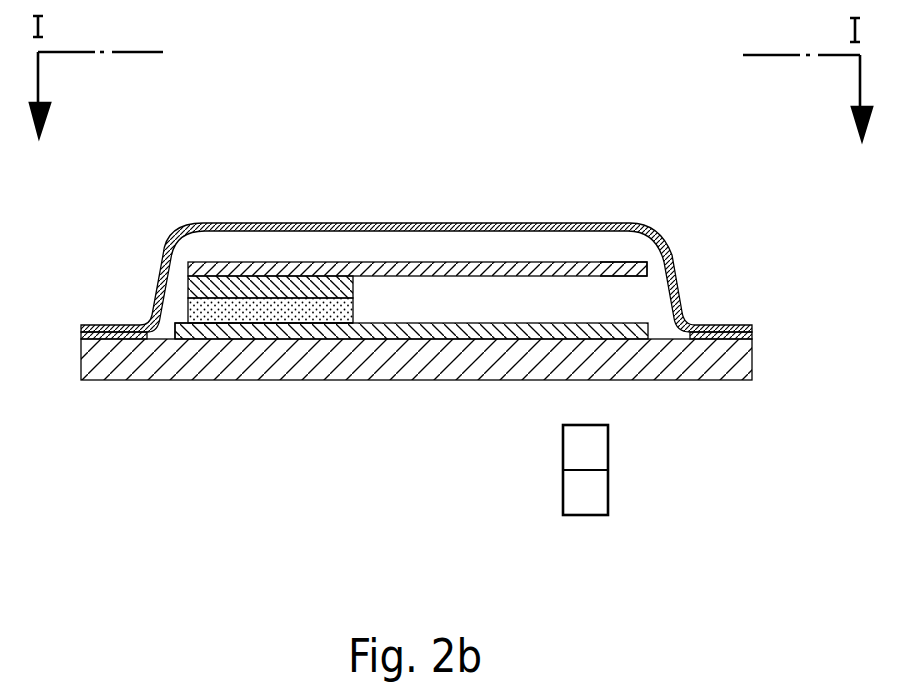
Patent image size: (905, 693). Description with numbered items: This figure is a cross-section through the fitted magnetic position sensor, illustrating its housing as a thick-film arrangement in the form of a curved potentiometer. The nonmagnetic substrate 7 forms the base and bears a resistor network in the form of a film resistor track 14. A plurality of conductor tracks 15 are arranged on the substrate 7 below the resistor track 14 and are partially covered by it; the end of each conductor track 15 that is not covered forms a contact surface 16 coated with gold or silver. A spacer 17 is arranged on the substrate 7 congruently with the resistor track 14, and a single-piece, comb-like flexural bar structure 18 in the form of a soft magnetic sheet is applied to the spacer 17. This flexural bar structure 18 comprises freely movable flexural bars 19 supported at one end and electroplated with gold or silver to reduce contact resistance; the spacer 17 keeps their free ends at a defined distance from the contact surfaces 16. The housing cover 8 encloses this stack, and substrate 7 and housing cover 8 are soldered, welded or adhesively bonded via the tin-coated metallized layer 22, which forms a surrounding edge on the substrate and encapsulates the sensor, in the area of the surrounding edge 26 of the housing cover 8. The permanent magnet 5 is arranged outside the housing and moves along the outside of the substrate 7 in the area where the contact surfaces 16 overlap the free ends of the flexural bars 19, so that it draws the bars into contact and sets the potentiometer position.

The permanent magnet 5 is at (608, 488).
The substrate 7 is at (459, 398).
The housing cover 8 is at (492, 229).
The resistor track 14 is at (327, 316).
The conductor tracks 15 is at (233, 330).
The contact surface 16 is at (452, 334).
The spacer 17 is at (209, 289).
The flexural bar structure 18 is at (251, 267).
The flexural bars 19 is at (626, 270).
The metallized layer 22 is at (752, 354).
The surrounding edge 26 is at (718, 328).